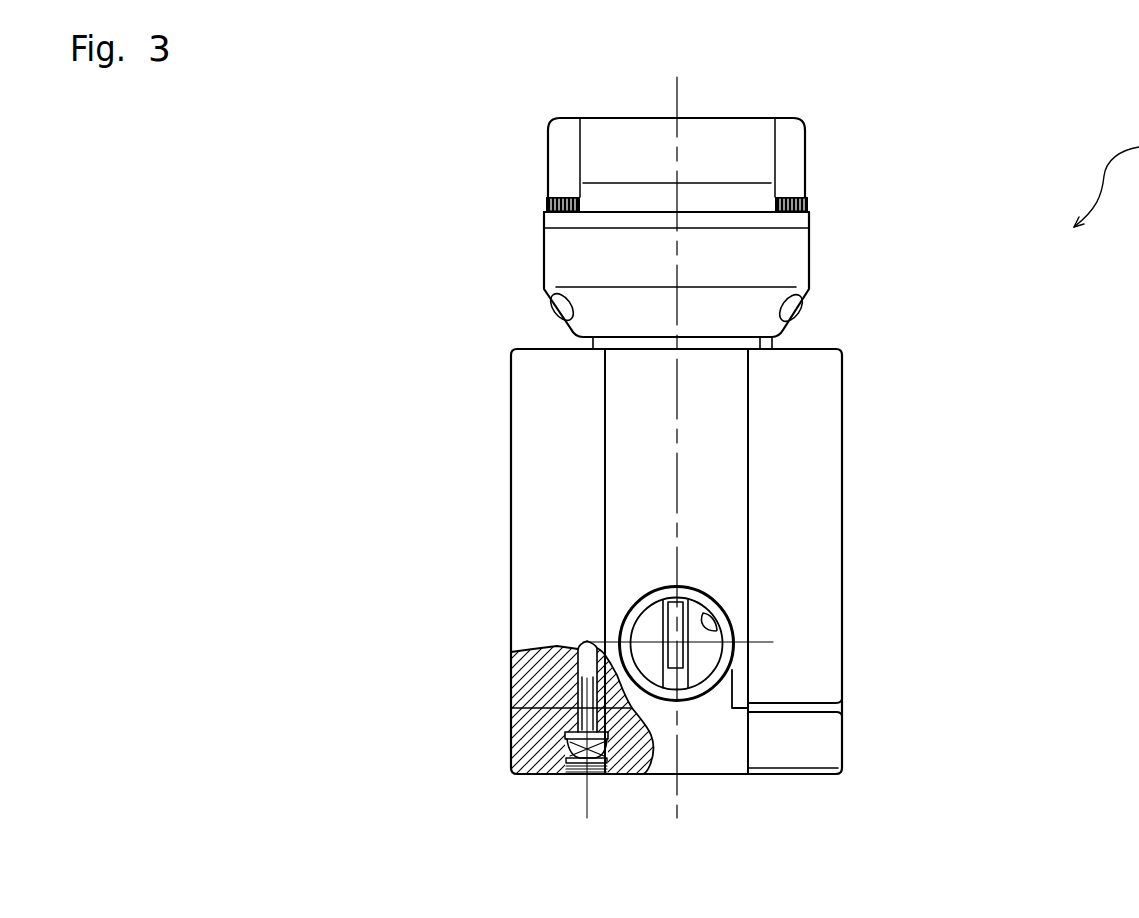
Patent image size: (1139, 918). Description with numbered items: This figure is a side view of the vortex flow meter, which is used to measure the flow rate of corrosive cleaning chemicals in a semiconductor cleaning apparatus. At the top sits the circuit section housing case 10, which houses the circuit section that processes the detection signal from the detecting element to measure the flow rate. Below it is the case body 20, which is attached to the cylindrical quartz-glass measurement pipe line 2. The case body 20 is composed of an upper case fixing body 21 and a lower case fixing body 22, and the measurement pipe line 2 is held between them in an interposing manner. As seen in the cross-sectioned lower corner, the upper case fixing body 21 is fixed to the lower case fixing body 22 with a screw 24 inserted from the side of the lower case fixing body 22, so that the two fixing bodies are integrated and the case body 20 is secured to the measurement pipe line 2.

The circuit section housing case 10 is at (800, 260).
The case body 20 is at (844, 446).
The upper case fixing body 21 is at (830, 543).
The lower case fixing body 22 is at (832, 745).
The measurement pipe line 2 is at (717, 630).
The screw 24 is at (583, 693).